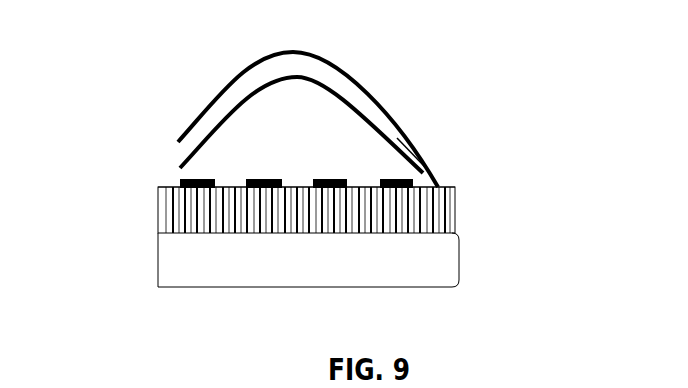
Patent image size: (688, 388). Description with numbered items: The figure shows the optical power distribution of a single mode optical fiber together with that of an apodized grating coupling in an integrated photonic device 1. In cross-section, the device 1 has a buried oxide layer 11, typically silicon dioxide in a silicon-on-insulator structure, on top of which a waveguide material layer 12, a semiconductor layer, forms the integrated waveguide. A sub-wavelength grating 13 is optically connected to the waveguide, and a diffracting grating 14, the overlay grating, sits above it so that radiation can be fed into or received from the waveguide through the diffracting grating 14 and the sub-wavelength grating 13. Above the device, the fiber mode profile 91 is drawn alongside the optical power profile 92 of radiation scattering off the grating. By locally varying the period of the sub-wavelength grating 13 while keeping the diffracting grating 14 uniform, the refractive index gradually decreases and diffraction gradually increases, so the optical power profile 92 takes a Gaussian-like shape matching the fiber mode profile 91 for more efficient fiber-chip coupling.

The integrated photonic device 1 is at (112, 141).
The buried oxide layer 11 is at (170, 272).
The waveguide material layer 12 is at (158, 212).
The sub-wavelength grating 13 is at (492, 196).
The diffracting grating 14 is at (368, 170).
The fiber mode profile 91 is at (318, 48).
The optical power profile 92 is at (448, 160).